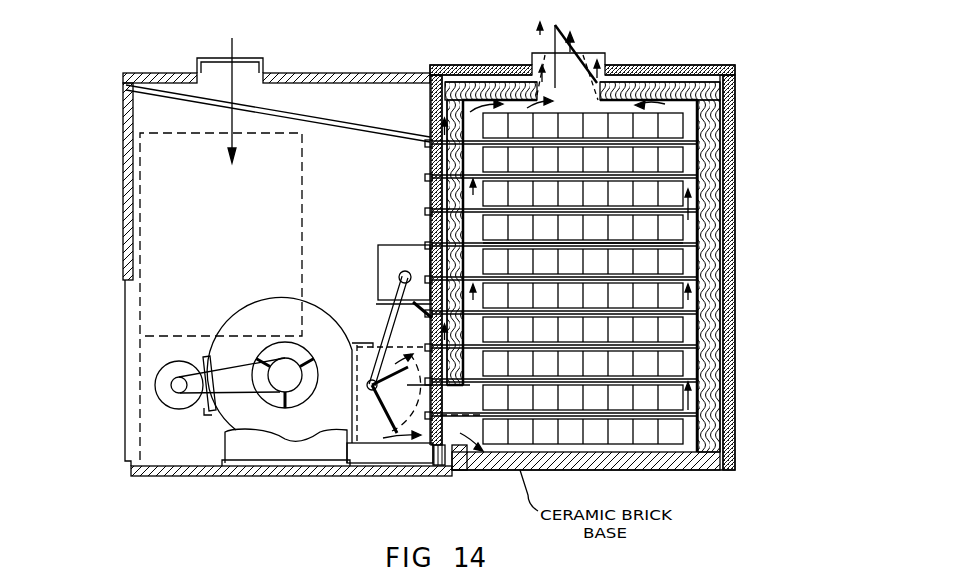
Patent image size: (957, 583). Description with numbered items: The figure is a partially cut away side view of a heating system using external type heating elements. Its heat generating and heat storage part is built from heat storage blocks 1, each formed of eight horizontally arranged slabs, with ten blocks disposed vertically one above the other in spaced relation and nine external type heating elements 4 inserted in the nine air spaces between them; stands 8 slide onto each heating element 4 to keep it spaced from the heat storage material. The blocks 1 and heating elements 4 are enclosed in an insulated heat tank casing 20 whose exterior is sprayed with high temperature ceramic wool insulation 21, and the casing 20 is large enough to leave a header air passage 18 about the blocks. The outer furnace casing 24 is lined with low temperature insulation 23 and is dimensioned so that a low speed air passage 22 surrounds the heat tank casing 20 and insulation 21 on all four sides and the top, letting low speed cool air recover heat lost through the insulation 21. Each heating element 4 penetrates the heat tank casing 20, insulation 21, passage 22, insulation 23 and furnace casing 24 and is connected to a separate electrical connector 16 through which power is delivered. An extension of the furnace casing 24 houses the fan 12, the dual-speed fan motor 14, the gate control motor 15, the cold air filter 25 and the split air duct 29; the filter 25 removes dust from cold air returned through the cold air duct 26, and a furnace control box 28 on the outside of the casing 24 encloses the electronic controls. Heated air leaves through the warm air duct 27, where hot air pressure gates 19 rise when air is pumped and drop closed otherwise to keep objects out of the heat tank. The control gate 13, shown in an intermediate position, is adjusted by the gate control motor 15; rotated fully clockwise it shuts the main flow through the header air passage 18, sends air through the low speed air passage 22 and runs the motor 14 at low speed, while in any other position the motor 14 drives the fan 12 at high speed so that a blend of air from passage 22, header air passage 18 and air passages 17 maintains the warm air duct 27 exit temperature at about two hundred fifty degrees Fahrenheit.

The heat storage blocks 1 is at (673, 160).
The external type heating element 4 is at (683, 174).
The stands 8 is at (434, 68).
The fan 12 is at (315, 285).
The control gate 13 is at (390, 404).
The dual-speed fan motor 14 is at (183, 411).
The gate control motor 15 is at (378, 253).
The electrical connector 16 is at (427, 198).
The air passages 17 is at (683, 238).
The header air passage 18 is at (427, 218).
The hot air pressure gates 19 is at (556, 25).
The heat tank casing 20 is at (708, 370).
The high temperature ceramic wool insulation 21 is at (640, 92).
The low speed air passage 22 is at (432, 105).
The low temperature insulation 23 is at (778, 488).
The furnace casing 24 is at (738, 447).
The cold air filter 25 is at (272, 110).
The cold air duct 26 is at (258, 55).
The warm air duct 27 is at (588, 52).
The furnace control box 28 is at (221, 296).
The split air duct 29 is at (427, 425).